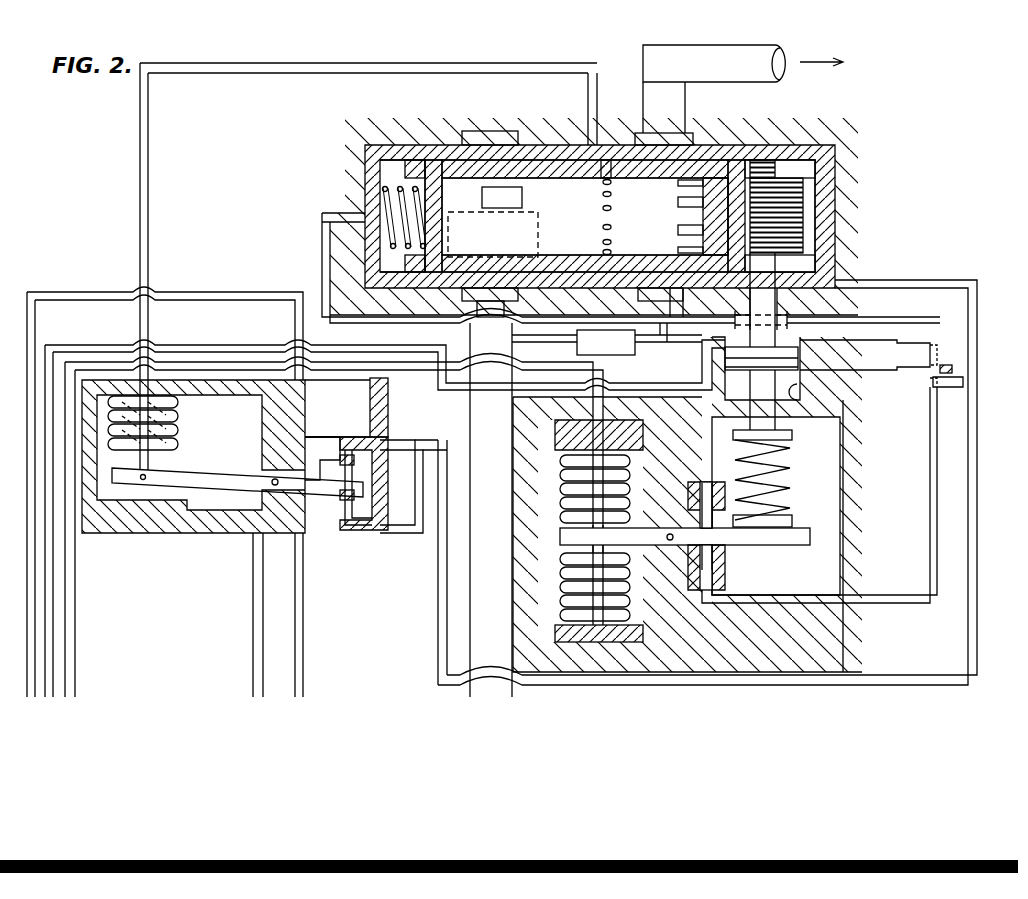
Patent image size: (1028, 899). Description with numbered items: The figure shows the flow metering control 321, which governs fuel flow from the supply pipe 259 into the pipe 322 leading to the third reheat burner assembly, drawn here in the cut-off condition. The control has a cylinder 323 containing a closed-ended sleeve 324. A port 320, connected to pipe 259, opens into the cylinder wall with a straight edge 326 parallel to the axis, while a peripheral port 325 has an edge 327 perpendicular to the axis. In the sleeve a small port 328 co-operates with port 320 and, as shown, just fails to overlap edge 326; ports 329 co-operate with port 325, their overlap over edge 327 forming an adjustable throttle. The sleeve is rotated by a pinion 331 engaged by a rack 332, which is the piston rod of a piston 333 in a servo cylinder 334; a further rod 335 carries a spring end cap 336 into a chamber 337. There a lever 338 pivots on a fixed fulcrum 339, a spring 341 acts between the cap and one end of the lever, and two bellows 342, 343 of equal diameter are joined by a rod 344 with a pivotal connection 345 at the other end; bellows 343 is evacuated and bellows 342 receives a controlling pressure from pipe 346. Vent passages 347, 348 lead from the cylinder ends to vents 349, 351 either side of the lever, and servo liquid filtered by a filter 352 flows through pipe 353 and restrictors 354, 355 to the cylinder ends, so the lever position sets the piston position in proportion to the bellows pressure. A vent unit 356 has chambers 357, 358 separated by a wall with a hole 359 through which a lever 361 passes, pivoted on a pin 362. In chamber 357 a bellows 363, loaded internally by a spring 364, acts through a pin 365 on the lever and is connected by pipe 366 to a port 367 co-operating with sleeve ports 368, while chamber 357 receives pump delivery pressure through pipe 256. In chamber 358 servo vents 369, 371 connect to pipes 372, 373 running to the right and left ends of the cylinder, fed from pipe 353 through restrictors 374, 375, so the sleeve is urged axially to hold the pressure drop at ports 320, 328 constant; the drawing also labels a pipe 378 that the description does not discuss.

The pipe 256 is at (255, 592).
The pipe 259 is at (480, 620).
The port 320 is at (484, 295).
The flow metering control 321 is at (862, 264).
The pipe 322 is at (745, 55).
The cylinder 323 is at (793, 165).
The sleeve 324 is at (715, 170).
The port 325 is at (665, 150).
The straight edge 326 is at (525, 214).
The edge 327 is at (672, 285).
The small port 328 is at (522, 196).
The ports 329 is at (682, 182).
The pinion 331 is at (795, 212).
The rack 332 is at (775, 270).
The piston 333 is at (795, 358).
The servo cylinder 334 is at (792, 402).
The rod 335 is at (768, 422).
The spring end cap 336 is at (785, 445).
The chamber 337 is at (830, 522).
The pivoted lever 338 is at (800, 545).
The fixed fulcrum 339 is at (668, 541).
The spring 341 is at (788, 517).
The bellows 342 is at (612, 480).
The bellows 343 is at (630, 588).
The rod 344 is at (600, 522).
The pivotal connection 345 is at (594, 538).
The pipe 346 is at (592, 367).
The vent passage 347 is at (700, 442).
The vent passage 348 is at (930, 584).
The vent 349 is at (695, 520).
The vent 351 is at (712, 556).
The filter 352 is at (628, 353).
The pipe 353 is at (685, 325).
The restrictor 354 is at (937, 352).
The restrictor 355 is at (940, 388).
The vent unit 356 is at (153, 549).
The chamber 357 is at (250, 457).
The chamber 358 is at (366, 417).
The hole 359 is at (270, 486).
The lever 361 is at (205, 482).
The pivot pin 362 is at (338, 438).
The bellows 363 is at (160, 400).
The spring 364 is at (160, 430).
The pin 365 is at (140, 482).
The pipe 366 is at (143, 163).
The port 367 is at (600, 155).
The ports 368 is at (610, 176).
The servo vent 369 is at (340, 468).
The servo vent 371 is at (352, 525).
The pipe 372 is at (440, 572).
The pipe 373 is at (405, 525).
The restrictor 374 is at (952, 369).
The restrictor 375 is at (438, 324).
The conduit 378 is at (247, 352).